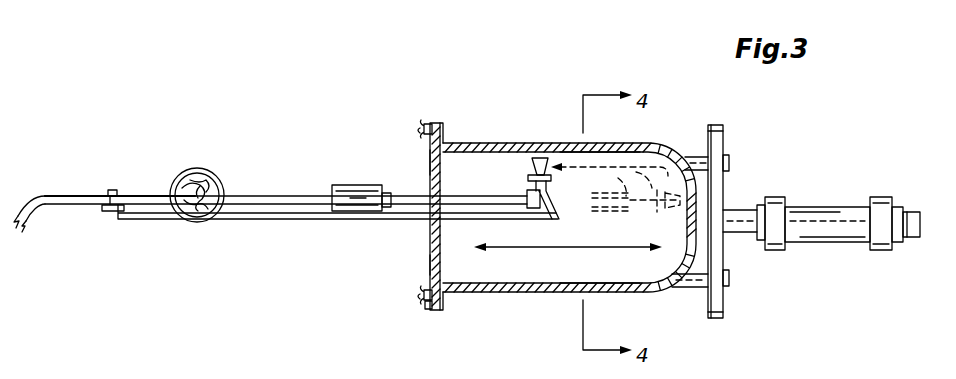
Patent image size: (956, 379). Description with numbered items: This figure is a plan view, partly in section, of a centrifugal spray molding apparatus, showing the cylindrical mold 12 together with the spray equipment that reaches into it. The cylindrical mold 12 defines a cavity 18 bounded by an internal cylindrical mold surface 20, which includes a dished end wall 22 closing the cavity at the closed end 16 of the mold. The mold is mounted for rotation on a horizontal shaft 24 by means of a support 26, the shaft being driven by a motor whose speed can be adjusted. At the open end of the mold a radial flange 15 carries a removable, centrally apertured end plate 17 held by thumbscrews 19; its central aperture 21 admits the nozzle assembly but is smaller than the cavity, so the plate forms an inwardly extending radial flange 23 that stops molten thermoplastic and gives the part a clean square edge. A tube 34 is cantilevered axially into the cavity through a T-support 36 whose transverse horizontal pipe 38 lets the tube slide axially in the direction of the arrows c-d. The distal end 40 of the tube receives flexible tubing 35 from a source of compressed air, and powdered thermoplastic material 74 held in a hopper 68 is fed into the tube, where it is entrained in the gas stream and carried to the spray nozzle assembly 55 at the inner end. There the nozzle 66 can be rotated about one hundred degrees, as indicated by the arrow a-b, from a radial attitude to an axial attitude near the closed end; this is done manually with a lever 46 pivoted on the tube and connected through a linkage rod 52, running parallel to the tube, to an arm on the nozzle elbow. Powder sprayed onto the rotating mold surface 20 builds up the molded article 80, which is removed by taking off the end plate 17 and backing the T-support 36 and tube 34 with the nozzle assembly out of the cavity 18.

The cylindrical mold 12 is at (563, 143).
The radial flange 15 is at (445, 298).
The closed end 16 is at (693, 208).
The end plate 17 is at (428, 306).
The cavity 18 is at (584, 251).
The thumbscrews 19 is at (421, 130).
The internal cylindrical mold surface 20 is at (606, 152).
The central aperture 21 is at (428, 166).
The dished end wall 22 is at (688, 208).
The inwardly extending radial flange 23 is at (430, 266).
The horizontal shaft 24 is at (742, 238).
The support 26 is at (716, 312).
The tube 34 is at (458, 189).
The flexible tubing 35 is at (23, 225).
The T-support 36 is at (387, 190).
The transverse horizontal pipe 38 is at (344, 185).
The distal end 40 is at (46, 191).
The lever 46 is at (109, 213).
The linkage rod 52 is at (146, 221).
The spray nozzle assembly 55 is at (516, 234).
The nozzle 66 is at (536, 158).
The hopper 68 is at (218, 184).
The powdered thermoplastic material 74 is at (184, 179).
The molded article 80 is at (566, 268).